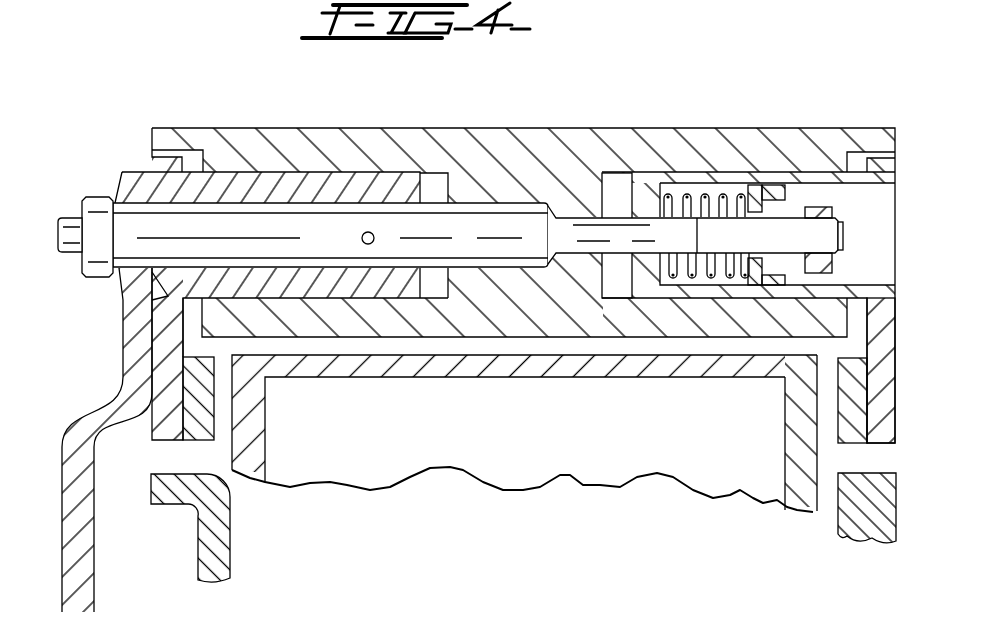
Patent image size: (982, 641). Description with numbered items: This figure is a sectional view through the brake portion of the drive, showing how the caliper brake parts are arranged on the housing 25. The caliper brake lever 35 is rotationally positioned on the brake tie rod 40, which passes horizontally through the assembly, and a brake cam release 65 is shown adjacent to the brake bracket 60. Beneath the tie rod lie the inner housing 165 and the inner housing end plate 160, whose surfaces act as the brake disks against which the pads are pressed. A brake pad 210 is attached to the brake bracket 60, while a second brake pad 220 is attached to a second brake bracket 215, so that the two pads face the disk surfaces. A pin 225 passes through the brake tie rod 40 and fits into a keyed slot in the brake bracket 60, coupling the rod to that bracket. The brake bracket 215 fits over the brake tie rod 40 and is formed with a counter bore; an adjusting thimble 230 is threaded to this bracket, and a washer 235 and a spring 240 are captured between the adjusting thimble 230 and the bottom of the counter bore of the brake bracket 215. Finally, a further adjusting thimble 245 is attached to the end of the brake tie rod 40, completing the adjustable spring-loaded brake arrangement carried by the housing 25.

The housing 25 is at (367, 143).
The caliper brake lever 35 is at (82, 587).
The brake tie rod 40 is at (70, 234).
The brake bracket 60 is at (163, 420).
The brake cam release 65 is at (163, 296).
The inner housing end plate 160 is at (800, 423).
The inner housing 165 is at (244, 423).
The brake pad 210 is at (198, 422).
The brake bracket 215 is at (887, 425).
The brake pad 220 is at (853, 427).
The pin 225 is at (363, 232).
The adjusting thimble 230 is at (770, 186).
The washer 235 is at (753, 193).
The spring 240 is at (667, 198).
The adjusting thimble 245 is at (825, 208).